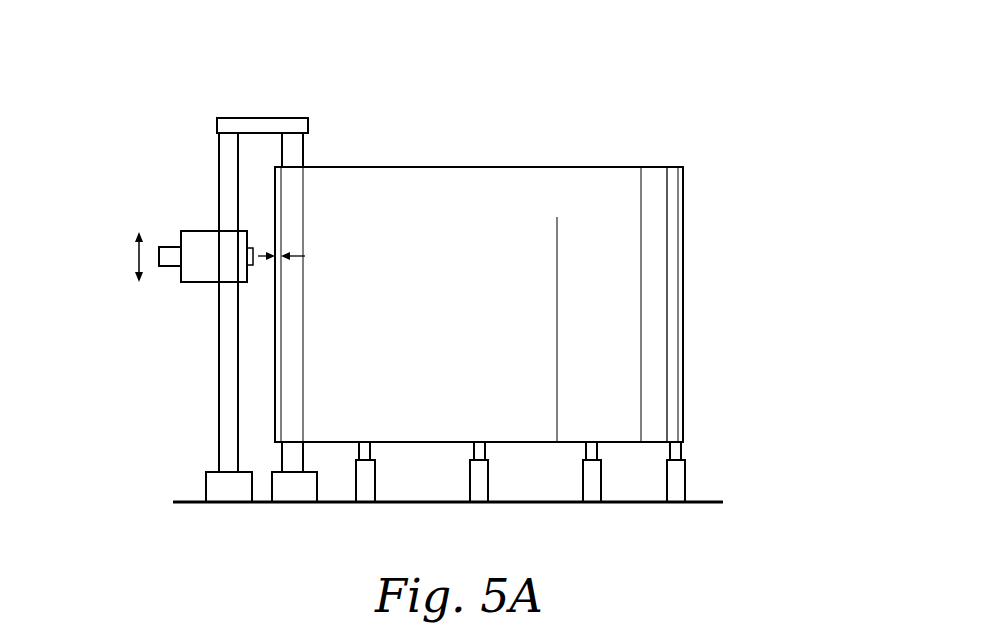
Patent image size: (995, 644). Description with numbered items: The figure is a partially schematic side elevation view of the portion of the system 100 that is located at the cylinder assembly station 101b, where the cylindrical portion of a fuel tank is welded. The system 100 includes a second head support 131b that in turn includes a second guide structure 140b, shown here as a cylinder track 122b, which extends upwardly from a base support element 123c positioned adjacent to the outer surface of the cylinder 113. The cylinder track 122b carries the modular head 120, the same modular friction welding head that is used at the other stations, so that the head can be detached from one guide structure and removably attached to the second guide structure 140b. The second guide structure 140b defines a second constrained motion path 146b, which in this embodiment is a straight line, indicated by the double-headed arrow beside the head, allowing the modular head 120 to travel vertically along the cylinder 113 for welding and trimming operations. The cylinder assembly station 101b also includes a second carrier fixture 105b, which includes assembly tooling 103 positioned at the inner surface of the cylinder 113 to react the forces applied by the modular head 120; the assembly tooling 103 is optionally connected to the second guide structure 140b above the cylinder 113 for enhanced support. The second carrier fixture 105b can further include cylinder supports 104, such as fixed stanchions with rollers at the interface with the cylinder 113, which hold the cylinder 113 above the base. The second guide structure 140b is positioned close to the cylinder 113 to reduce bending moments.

The system 100 is at (655, 78).
The cylinder assembly station 101b is at (160, 500).
The assembly tooling 103 is at (303, 149).
The cylinder supports 104 is at (686, 483).
The second carrier fixture 105b is at (716, 436).
The cylinder 113 is at (683, 262).
The modular head 120 is at (198, 231).
The cylinder track 122b is at (219, 361).
The base support element 123c is at (206, 487).
The second head support 131b is at (164, 309).
The second guide structure 140b is at (212, 416).
The second constrained motion path 146b is at (135, 249).